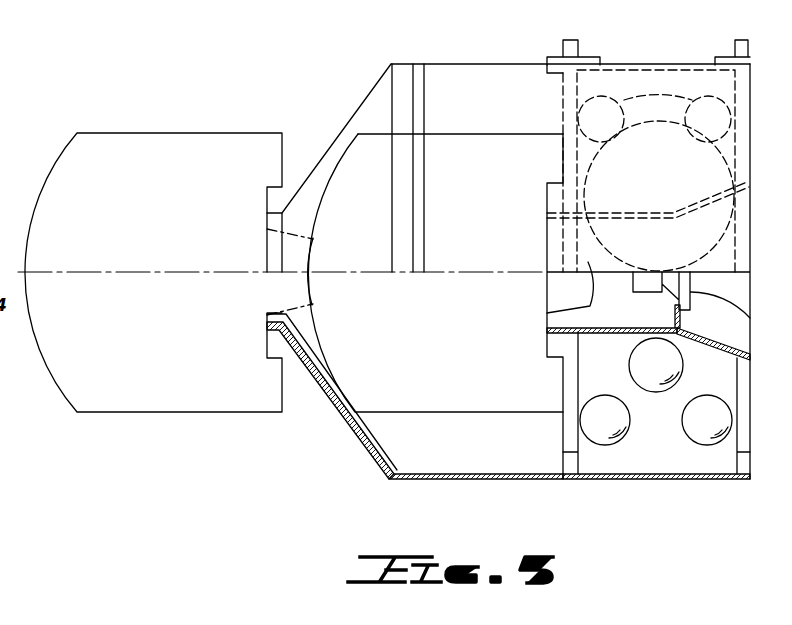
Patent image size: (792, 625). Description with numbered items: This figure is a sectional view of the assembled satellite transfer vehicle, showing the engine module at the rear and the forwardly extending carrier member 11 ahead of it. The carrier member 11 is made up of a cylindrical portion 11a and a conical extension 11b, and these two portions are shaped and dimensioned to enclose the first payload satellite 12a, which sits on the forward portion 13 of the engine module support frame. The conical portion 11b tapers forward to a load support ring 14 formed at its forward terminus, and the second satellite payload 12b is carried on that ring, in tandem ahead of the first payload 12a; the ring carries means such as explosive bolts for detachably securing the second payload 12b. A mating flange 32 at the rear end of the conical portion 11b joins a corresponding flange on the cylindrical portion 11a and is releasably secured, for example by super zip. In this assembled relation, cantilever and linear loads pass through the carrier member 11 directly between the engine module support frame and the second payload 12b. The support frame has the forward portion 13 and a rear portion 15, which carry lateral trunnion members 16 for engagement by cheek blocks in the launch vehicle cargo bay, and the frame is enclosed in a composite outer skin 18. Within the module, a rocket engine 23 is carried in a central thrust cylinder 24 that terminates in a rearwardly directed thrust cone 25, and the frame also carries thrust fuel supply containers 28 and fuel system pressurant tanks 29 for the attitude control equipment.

The forwardly extending carrier member 11 is at (753, 392).
The cylindrical portion 11a is at (469, 474).
The conical extension 11b is at (346, 396).
The first payload satellite 12a is at (465, 384).
The second satellite payload 12b is at (150, 406).
The forward portion of the support frame 13 is at (567, 362).
The load support ring 14 is at (276, 212).
The rear portion of the support frame 15 is at (750, 466).
The lateral trunnion members 16 is at (578, 46).
The composite outer skin 18 is at (680, 478).
The rocket engine 23 is at (735, 232).
The central thrust cylinder 24 is at (607, 326).
The thrust cone 25 is at (740, 349).
The thrust fuel supply containers 28 is at (700, 432).
The fuel system pressurant tanks 29 is at (649, 171).
The mating flange 32 is at (418, 64).